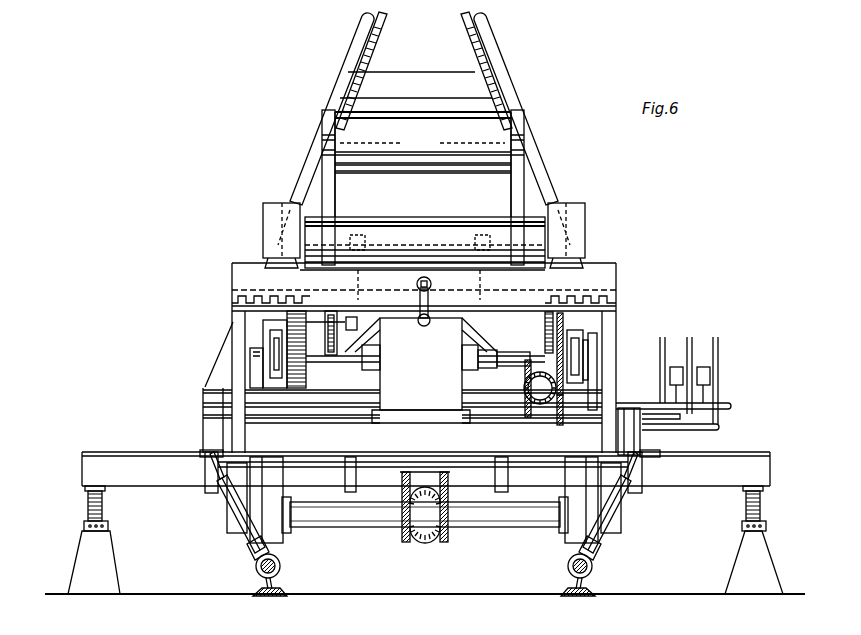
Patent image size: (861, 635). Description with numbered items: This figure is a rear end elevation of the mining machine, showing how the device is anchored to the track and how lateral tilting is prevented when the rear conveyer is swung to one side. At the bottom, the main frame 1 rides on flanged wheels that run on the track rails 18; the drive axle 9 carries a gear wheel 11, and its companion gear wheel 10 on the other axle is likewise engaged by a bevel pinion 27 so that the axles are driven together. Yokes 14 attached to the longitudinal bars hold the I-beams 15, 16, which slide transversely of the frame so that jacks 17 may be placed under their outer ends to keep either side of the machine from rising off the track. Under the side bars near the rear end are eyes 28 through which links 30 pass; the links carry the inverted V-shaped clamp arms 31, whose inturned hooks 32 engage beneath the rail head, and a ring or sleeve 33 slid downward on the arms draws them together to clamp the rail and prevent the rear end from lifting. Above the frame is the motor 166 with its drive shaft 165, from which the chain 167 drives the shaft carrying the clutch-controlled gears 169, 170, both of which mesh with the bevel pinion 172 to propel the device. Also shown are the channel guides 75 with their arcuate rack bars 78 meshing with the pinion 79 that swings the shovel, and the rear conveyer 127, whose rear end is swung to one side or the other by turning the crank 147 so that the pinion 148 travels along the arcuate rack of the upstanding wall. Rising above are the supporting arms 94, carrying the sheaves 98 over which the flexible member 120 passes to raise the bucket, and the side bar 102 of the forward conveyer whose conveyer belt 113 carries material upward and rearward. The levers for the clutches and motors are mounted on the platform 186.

The main frame 1 is at (234, 440).
The drive axle 9 is at (538, 528).
The gear wheel 10 is at (406, 536).
The gear wheel 11 is at (452, 537).
The yokes 14 is at (206, 476).
The I-beam 15 is at (92, 462).
The I-beam 16 is at (756, 471).
The jacks 17 is at (86, 556).
The track rails 18 is at (273, 596).
The bevel pinion 27 is at (426, 536).
The eyes 28 is at (184, 453).
The links 30 is at (215, 493).
The clamp arms 31 is at (232, 522).
The inturned hooks 32 is at (287, 568).
The ring or sleeve 33 is at (250, 554).
The channel guides 75 is at (252, 360).
The arcuate rack bars 78 is at (272, 344).
The pinion 79 is at (290, 323).
The supporting arms 94 is at (316, 129).
The sheaves 98 is at (470, 33).
The side bar 102 is at (326, 182).
The conveyer belt 113 is at (486, 122).
The flexible member 120 is at (366, 63).
The rear conveyer 127 is at (253, 233).
The crank 147 is at (442, 301).
The pinion 148 is at (570, 293).
The drive shaft 165 is at (521, 358).
The motor 166 is at (401, 367).
The chain 167 is at (580, 347).
The gear 169 is at (547, 425).
The gear 170 is at (553, 420).
The bevel pinion 172 is at (572, 372).
The platform 186 is at (728, 397).